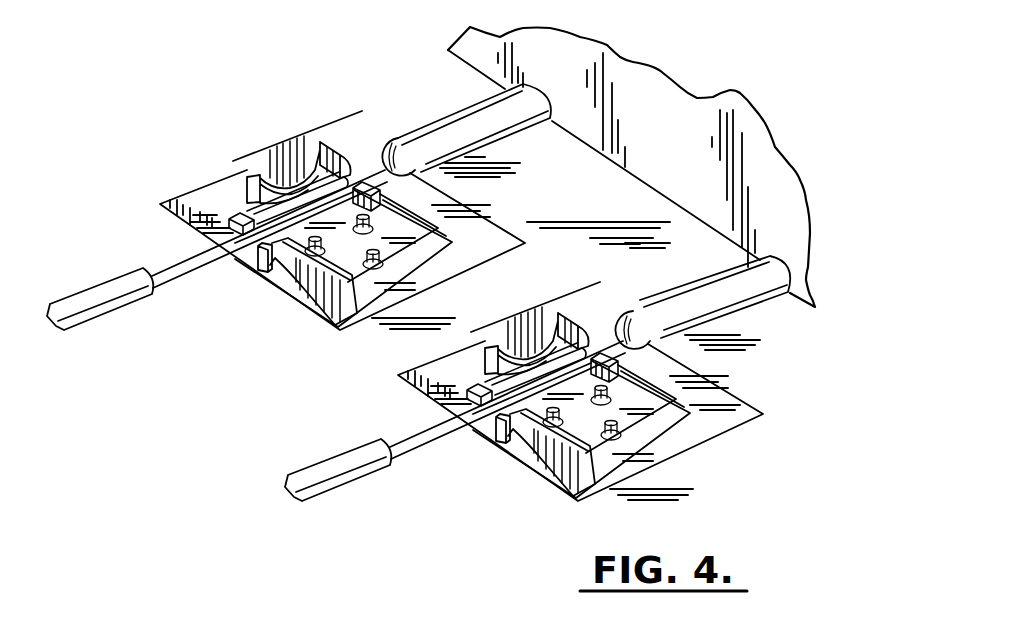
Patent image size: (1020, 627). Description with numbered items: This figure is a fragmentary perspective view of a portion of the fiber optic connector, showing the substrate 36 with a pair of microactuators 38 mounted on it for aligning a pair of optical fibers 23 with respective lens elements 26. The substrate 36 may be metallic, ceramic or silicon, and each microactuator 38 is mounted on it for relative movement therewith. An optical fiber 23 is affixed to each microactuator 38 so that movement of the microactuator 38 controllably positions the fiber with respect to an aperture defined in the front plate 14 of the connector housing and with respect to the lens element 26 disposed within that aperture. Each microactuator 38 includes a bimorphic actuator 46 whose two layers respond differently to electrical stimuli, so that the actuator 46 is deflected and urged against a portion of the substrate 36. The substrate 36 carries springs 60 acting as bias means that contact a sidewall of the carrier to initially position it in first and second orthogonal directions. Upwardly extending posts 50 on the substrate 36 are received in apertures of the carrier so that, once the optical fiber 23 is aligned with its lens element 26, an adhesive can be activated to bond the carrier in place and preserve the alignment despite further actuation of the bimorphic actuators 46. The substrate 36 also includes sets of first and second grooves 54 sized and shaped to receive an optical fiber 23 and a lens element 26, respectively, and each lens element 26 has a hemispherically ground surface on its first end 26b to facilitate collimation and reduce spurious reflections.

The front plate 14 is at (750, 150).
The optical fiber 23 is at (96, 312).
The lens element 26 is at (510, 123).
The first end of lens element 26b is at (402, 147).
The substrate 36 is at (320, 385).
The microactuator 38 is at (592, 217).
The bimorphic actuator 46 is at (238, 213).
The post 50 is at (373, 268).
The first and second grooves 54 is at (640, 305).
The spring 60 is at (300, 158).